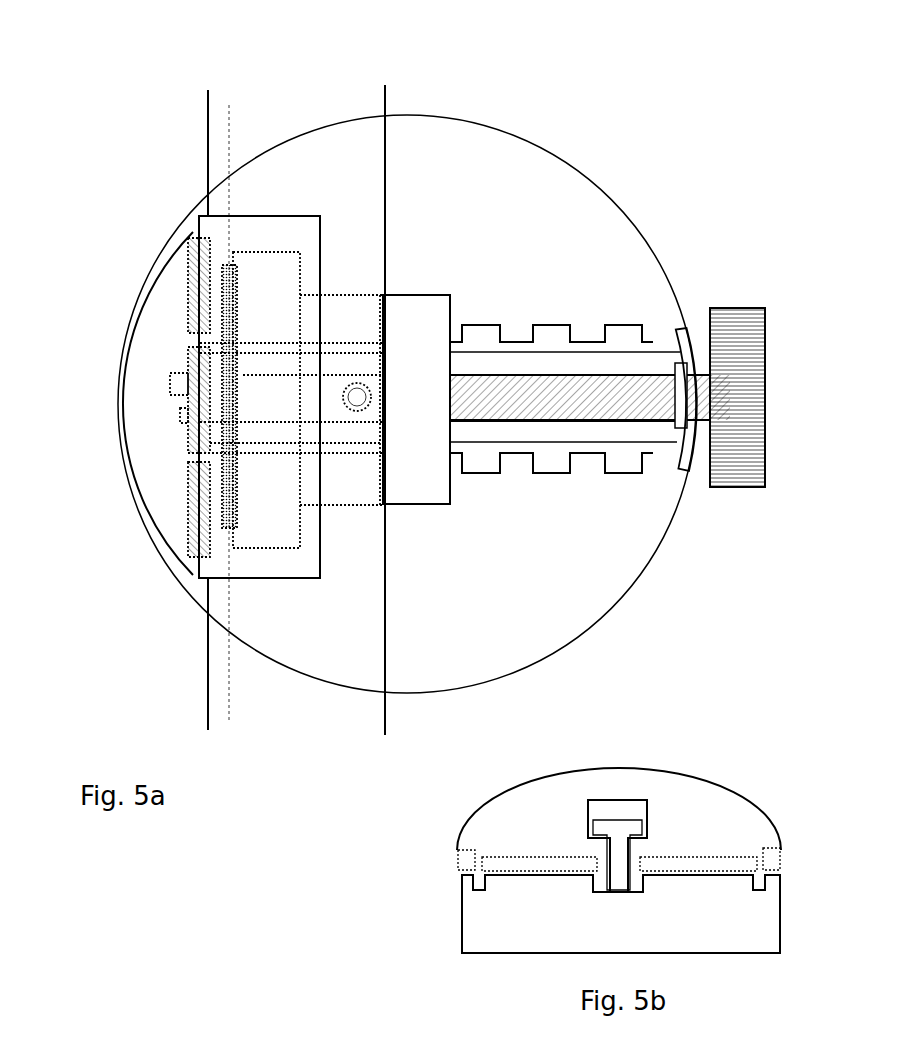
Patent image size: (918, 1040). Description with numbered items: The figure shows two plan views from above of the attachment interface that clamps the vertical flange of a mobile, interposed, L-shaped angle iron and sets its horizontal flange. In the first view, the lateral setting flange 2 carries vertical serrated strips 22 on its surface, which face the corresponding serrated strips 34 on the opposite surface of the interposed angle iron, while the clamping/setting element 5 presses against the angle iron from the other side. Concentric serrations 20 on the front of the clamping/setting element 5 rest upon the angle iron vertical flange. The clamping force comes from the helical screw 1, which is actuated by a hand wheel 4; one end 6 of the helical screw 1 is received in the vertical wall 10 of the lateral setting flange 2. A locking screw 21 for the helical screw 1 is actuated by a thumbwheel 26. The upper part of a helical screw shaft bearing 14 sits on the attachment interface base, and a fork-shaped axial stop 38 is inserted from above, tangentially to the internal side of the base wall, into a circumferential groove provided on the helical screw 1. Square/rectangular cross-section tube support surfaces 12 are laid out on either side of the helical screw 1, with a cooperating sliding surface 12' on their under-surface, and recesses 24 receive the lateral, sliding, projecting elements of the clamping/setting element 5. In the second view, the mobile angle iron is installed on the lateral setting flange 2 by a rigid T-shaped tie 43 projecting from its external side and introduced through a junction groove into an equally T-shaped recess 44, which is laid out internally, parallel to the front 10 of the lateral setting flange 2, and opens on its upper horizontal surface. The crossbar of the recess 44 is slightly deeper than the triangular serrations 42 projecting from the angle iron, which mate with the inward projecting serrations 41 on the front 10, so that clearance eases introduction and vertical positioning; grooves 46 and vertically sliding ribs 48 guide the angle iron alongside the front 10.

In FIG. 5A, the helical screw 1 is at (652, 430).
In FIG. 5A, the lateral setting flange 2 is at (153, 310).
In FIG. 5B, the lateral setting flange 2 is at (461, 819).
In FIG. 5A, the actuator hand wheel 4 is at (760, 290).
In FIG. 5A, the clamping/setting element 5 is at (283, 293).
In FIG. 5A, the end of helical screw 6 is at (174, 404).
In FIG. 5B, the front of lateral setting flange 10 is at (767, 869).
In FIG. 5A, the tube support platform 12 is at (565, 300).
In FIG. 5A, the cooperating sliding surface 12' is at (590, 289).
In FIG. 5A, the helical screw shaft bearing upper part 14 is at (697, 330).
In FIG. 5A, the concentric serrations 20 is at (223, 533).
In FIG. 5A, the locking screw 21 is at (451, 548).
In FIG. 5A, the thumbwheel 26 is at (375, 420).
In FIG. 5A, the vertical serrated strips 22 is at (183, 315).
In FIG. 5A, the recesses 24 is at (483, 467).
In FIG. 5A, the vertical serrated strips of angle iron 34 is at (215, 510).
In FIG. 5A, the axial stop fork 38 is at (680, 412).
In FIG. 5B, the inward projecting triangular serrations 41 is at (533, 858).
In FIG. 5B, the outward projecting triangular serrations 42 is at (495, 883).
In FIG. 5B, the rigid T-shaped tie 43 is at (640, 825).
In FIG. 5B, the T-shaped recess 44 is at (635, 807).
In FIG. 5B, the grooves 46 is at (460, 861).
In FIG. 5B, the vertically sliding ribs 48 is at (462, 887).